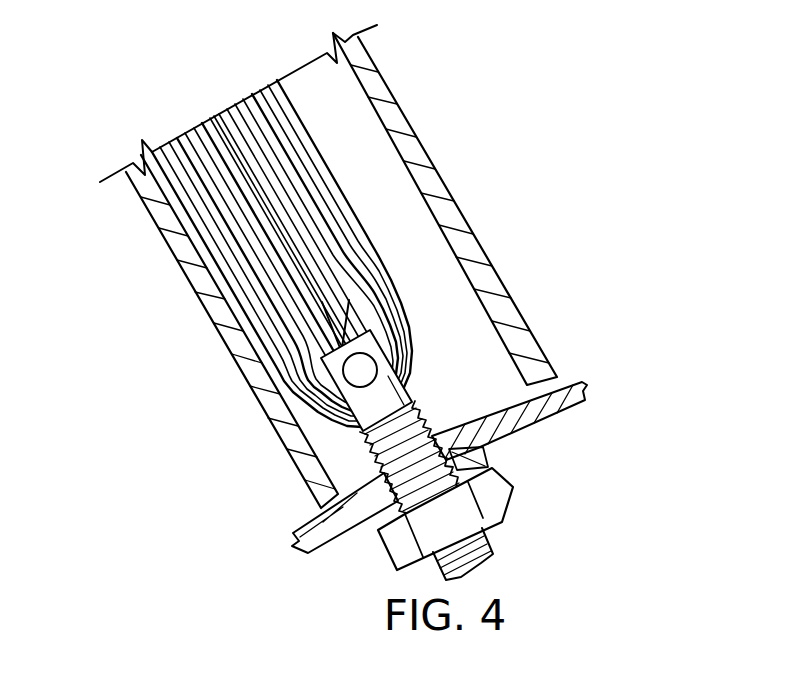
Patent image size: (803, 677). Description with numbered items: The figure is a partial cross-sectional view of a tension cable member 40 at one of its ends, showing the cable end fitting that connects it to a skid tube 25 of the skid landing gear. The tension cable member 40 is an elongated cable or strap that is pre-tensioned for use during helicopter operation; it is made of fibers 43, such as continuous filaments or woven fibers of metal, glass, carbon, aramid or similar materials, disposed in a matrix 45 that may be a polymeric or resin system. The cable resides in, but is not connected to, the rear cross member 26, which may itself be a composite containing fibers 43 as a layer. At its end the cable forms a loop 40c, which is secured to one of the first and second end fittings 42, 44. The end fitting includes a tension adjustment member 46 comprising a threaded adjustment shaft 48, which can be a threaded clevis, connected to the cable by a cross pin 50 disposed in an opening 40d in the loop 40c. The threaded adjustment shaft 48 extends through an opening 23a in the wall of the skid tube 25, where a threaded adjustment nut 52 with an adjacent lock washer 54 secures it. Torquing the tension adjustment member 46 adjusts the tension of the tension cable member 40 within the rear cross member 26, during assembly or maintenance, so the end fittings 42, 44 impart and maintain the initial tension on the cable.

The opening 23a is at (384, 471).
The skid tube 25 is at (509, 403).
The rear cross member 26 is at (459, 212).
The tension cable member 40 is at (332, 243).
The loop 40c is at (410, 294).
The opening 40d is at (330, 330).
The first end fitting 42 is at (490, 449).
The second end fitting 44 is at (490, 449).
The fibers 43 is at (215, 237).
The matrix 45 is at (207, 132).
The tension adjustment member 46 is at (438, 455).
The threaded adjustment shaft 48 is at (428, 428).
The cross pin 50 is at (370, 368).
The threaded adjustment nut 52 is at (545, 500).
The lock washer 54 is at (488, 456).